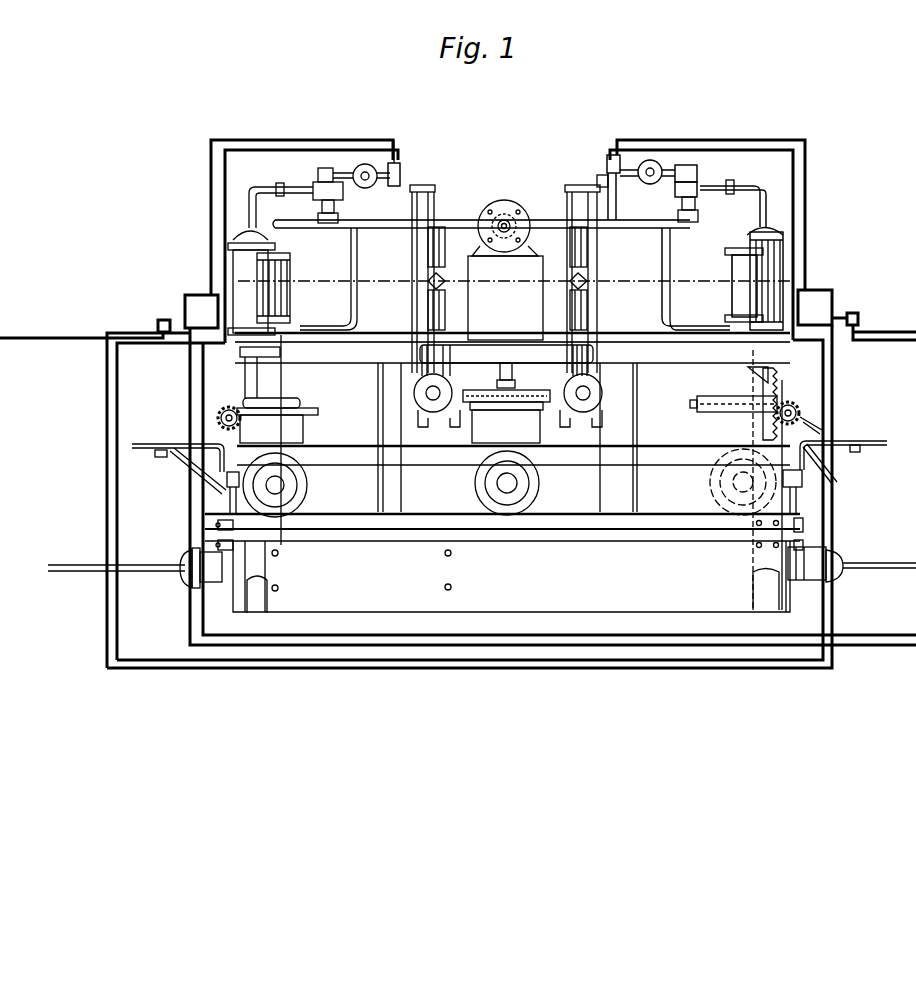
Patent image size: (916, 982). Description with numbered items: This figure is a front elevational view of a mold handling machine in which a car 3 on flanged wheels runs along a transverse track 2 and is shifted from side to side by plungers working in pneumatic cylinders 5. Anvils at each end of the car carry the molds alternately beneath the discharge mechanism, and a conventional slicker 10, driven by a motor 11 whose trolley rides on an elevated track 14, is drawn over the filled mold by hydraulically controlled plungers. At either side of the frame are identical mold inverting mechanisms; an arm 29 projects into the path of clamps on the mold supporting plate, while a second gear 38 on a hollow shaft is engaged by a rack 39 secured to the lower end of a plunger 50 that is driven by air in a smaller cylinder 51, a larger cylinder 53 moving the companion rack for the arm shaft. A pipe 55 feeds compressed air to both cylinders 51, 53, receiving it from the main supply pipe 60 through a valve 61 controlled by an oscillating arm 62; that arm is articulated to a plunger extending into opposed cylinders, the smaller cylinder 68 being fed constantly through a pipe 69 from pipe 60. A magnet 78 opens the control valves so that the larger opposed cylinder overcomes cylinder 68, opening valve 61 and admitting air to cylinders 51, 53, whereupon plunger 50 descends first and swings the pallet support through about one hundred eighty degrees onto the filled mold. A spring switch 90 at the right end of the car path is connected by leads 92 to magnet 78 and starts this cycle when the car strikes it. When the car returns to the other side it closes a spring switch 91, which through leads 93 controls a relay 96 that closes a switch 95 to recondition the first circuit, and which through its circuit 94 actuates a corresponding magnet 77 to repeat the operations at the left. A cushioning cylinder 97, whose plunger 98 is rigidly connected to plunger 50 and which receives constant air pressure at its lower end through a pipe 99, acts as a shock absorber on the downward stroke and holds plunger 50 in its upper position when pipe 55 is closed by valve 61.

The transverse track 2 is at (575, 515).
The car 3 is at (457, 463).
The cylinders 5 is at (213, 573).
The slicker 10 is at (478, 390).
The motor 11 is at (514, 208).
The elevated track 14 is at (430, 282).
The arm 29 is at (697, 410).
The second gear 38 is at (784, 406).
The rack 39 is at (768, 383).
The plunger 50 is at (768, 364).
The cylinder 51 is at (768, 296).
The larger cylinder 53 is at (785, 266).
The pipe 55 is at (762, 207).
The main supply pipe 60 is at (636, 228).
The valve 61 is at (698, 185).
The oscillating arm 62 is at (665, 172).
The pneumatic cylinder 68 is at (657, 185).
The pipe 69 is at (600, 181).
The magnet 77 is at (398, 165).
The magnet 78 is at (607, 162).
The spring switch 90 is at (802, 480).
The spring switch 91 is at (227, 481).
The leads 92 is at (826, 412).
The leads 93 is at (460, 646).
The circuit 94 is at (211, 218).
The switch 95 is at (818, 310).
The relay 96 is at (858, 320).
The cushioning cylinder 97 is at (735, 298).
The plunger 98 is at (747, 346).
The pipe 99 is at (672, 320).